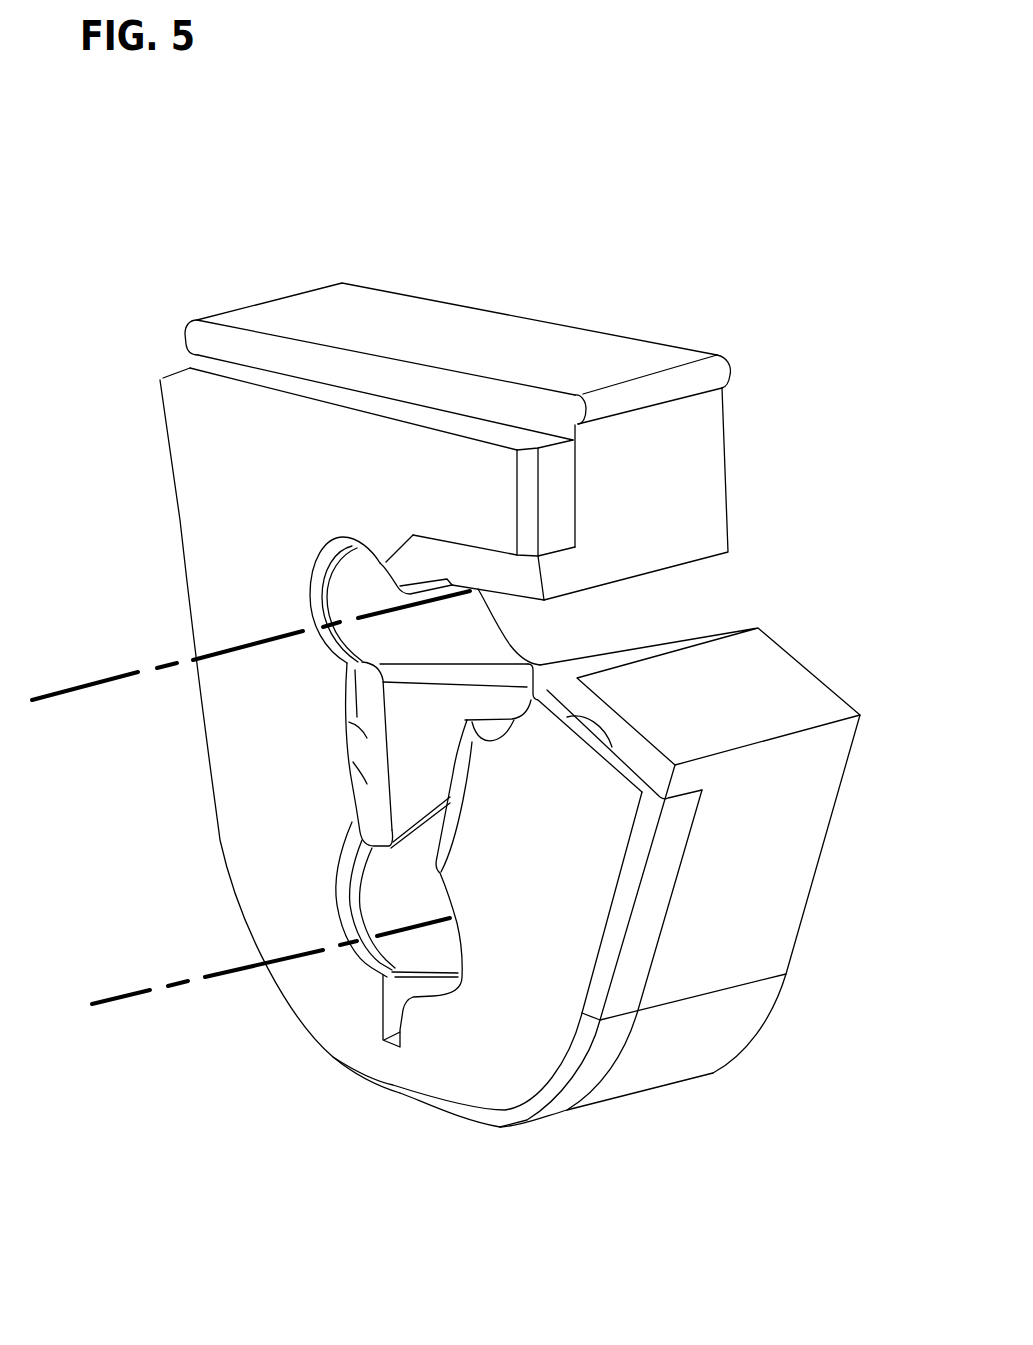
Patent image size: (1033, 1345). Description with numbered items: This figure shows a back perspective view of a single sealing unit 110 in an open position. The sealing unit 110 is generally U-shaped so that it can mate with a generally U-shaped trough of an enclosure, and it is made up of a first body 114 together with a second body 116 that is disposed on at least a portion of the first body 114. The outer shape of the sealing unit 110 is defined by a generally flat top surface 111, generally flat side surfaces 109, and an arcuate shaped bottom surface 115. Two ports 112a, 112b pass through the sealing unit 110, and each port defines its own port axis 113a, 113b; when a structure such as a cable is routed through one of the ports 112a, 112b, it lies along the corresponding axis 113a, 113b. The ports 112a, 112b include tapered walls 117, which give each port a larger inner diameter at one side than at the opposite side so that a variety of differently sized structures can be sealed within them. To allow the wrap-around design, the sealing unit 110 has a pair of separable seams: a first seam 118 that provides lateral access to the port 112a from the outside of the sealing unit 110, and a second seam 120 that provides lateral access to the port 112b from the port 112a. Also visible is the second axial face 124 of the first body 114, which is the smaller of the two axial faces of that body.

The side surface 109 is at (789, 804).
The sealing unit 110 is at (688, 242).
The top surface 111 is at (391, 325).
The port 112a is at (353, 581).
The port 112b is at (419, 944).
The port axis 113a is at (120, 678).
The port axis 113b is at (135, 993).
The first body 114 is at (247, 435).
The bottom surface 115 is at (430, 1144).
The second body 116 is at (500, 350).
The tapered walls 117 is at (350, 638).
The first seam 118 is at (767, 690).
The second seam 120 is at (410, 750).
The second axial face 124 is at (593, 858).